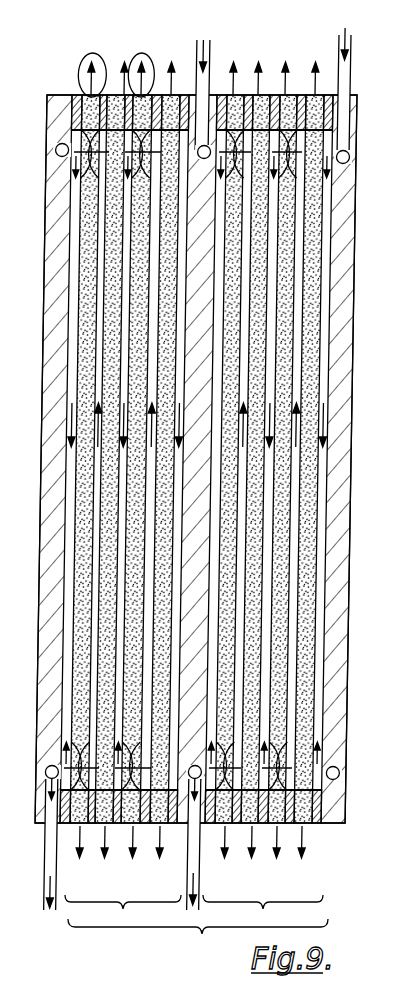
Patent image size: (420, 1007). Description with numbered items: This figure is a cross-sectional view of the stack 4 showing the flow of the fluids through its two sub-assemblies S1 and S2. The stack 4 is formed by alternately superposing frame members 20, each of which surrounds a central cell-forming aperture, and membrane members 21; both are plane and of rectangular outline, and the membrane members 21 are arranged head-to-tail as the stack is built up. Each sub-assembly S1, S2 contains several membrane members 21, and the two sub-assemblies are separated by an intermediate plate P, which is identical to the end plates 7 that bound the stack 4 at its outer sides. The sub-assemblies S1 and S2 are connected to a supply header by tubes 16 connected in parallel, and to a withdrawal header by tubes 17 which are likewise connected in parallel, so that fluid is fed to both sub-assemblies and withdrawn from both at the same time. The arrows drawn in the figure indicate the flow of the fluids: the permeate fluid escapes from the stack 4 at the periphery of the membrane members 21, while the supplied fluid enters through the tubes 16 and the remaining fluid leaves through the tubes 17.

The end plate 7 is at (47, 241).
The intermediate plate P is at (193, 366).
The membrane member 21 is at (118, 112).
The frame member 20 is at (198, 67).
The tube 16 is at (197, 68).
The tube 17 is at (182, 868).
The sub-assembly S2 is at (123, 915).
The sub-assembly S1 is at (263, 915).
The stack 4 is at (198, 943).